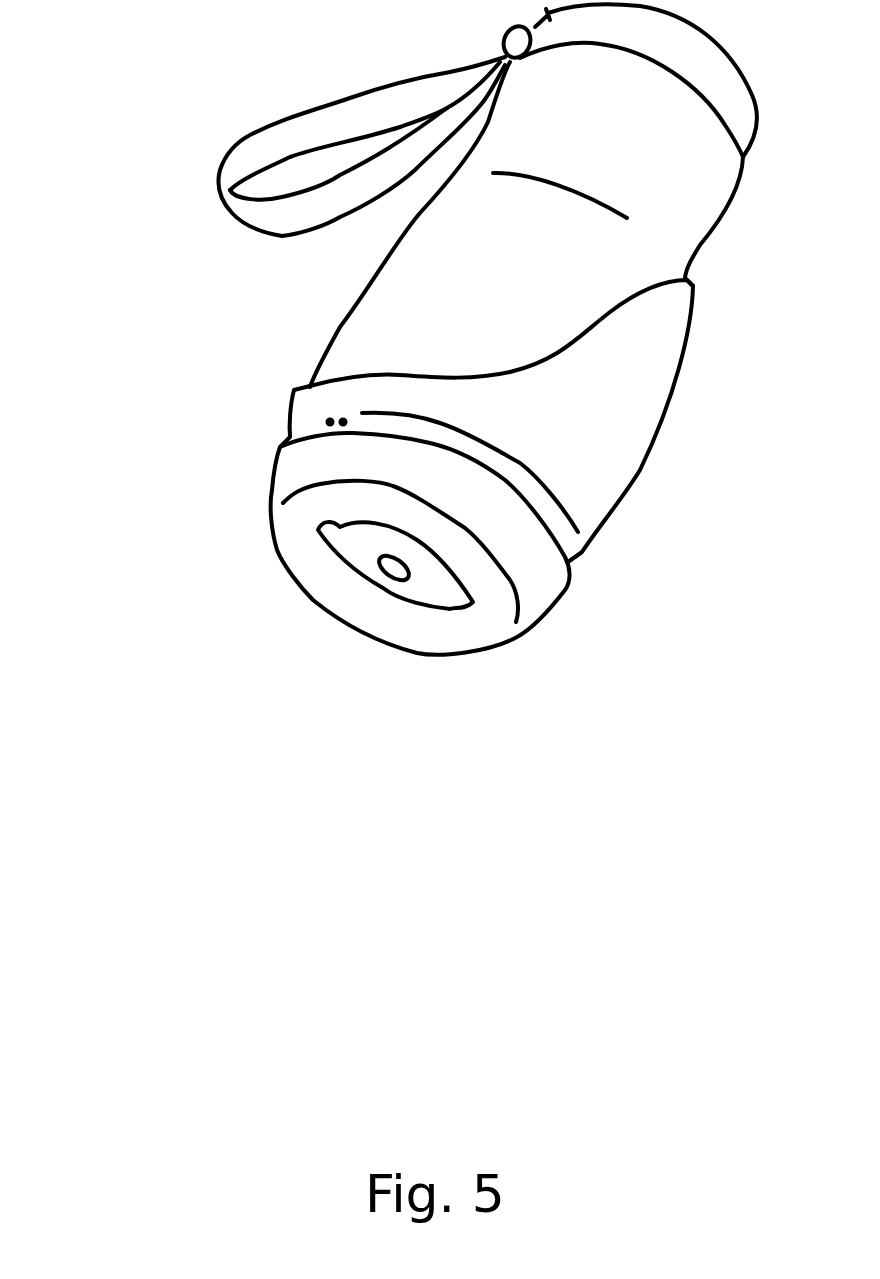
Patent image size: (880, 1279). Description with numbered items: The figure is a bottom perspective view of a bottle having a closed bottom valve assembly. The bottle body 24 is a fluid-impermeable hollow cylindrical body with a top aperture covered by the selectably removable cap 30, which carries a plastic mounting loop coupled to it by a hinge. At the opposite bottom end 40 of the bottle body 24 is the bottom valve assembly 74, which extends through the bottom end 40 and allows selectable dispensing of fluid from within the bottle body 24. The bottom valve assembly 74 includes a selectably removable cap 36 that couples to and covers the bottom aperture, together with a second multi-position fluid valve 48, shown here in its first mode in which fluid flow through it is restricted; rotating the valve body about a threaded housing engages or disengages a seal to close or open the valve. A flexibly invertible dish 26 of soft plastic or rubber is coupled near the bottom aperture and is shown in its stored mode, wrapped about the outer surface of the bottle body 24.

The bottle body 24 is at (490, 308).
The flexibly invertible dish 26 is at (570, 418).
The selectably removable cap 30 is at (670, 38).
The selectably removable cap 36 is at (480, 495).
The bottom end 40 is at (176, 481).
The second multi-position fluid valve 48 is at (413, 592).
The bottom valve assembly 74 is at (361, 647).